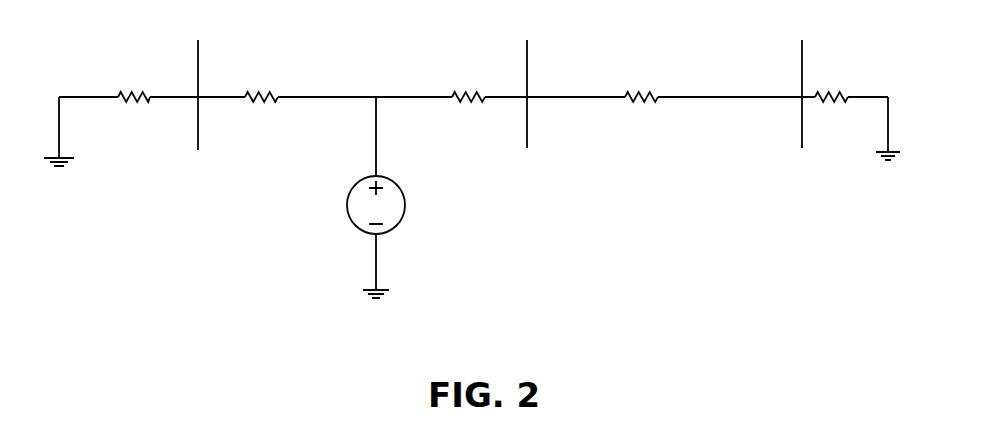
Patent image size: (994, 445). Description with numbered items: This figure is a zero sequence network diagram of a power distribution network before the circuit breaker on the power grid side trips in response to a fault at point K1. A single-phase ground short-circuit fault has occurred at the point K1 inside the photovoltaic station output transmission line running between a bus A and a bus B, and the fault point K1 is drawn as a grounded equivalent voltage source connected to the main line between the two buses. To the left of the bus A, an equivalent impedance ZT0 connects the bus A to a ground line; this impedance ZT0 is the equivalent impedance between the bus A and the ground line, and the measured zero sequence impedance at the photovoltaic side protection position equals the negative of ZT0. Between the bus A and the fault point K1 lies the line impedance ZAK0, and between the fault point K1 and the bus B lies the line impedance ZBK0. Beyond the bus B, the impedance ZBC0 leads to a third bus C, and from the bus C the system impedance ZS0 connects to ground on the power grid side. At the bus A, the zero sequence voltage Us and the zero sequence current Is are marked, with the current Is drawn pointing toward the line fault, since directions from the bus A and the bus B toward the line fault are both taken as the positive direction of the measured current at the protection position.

The bus A is at (198, 79).
The bus B is at (527, 75).
The bus C is at (802, 74).
The fault point K1 is at (376, 182).
The equivalent impedance between bus A and ground line ZT0 is at (134, 81).
The zero-sequence impedance between bus A and fault point K1 ZAK0 is at (259, 81).
The zero-sequence impedance between bus B and fault point K1 ZBK0 is at (465, 81).
The zero-sequence impedance between bus B and bus C ZBC0 is at (640, 81).
The zero-sequence impedance of system source ZS0 is at (832, 81).
The zero-sequence current at bus A Is is at (233, 121).
The zero-sequence voltage at bus A Us is at (192, 173).